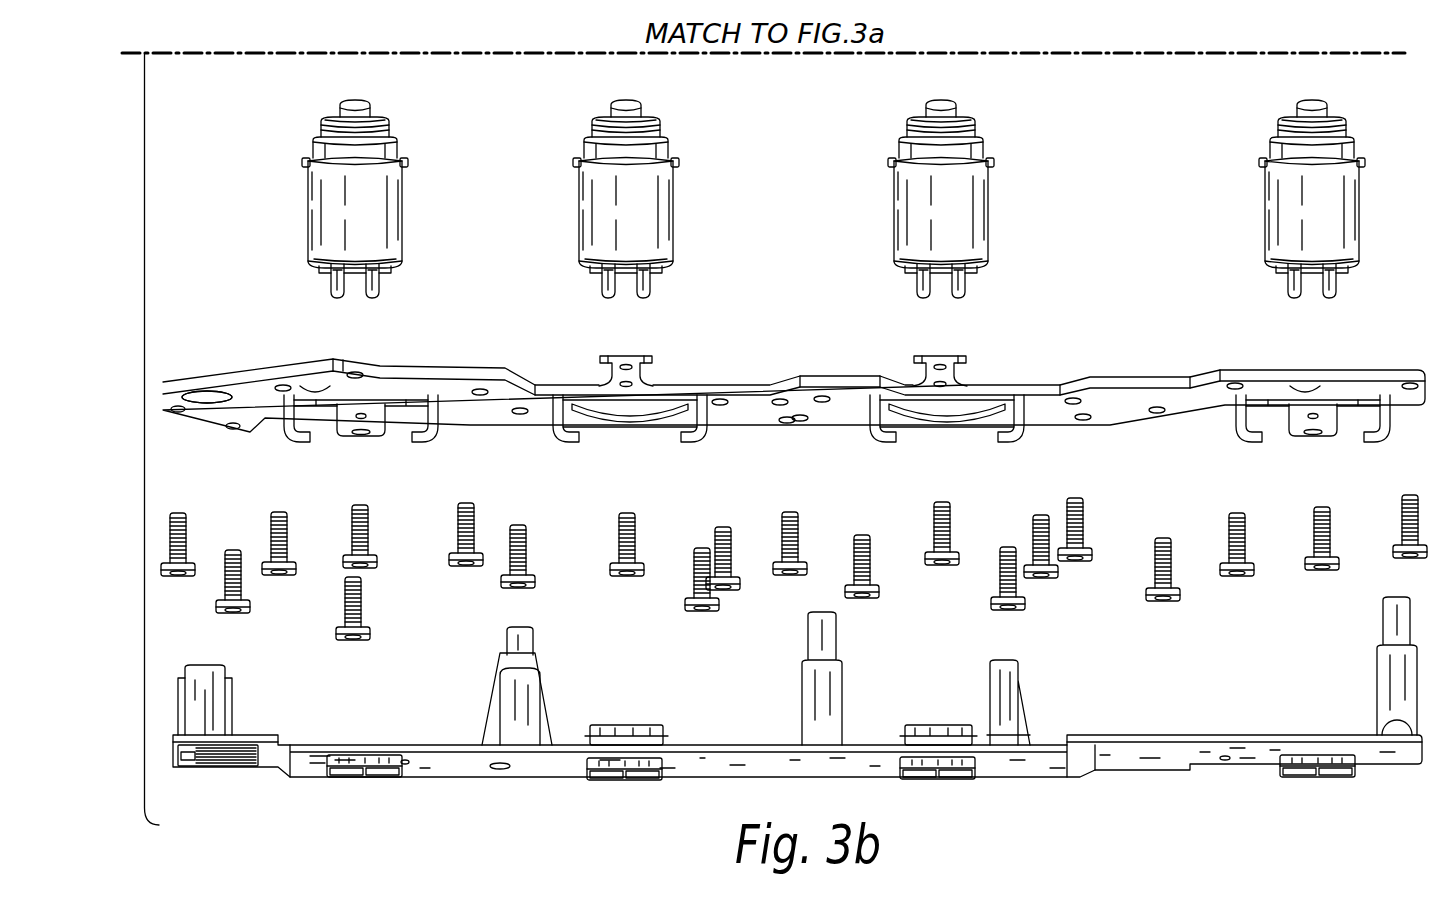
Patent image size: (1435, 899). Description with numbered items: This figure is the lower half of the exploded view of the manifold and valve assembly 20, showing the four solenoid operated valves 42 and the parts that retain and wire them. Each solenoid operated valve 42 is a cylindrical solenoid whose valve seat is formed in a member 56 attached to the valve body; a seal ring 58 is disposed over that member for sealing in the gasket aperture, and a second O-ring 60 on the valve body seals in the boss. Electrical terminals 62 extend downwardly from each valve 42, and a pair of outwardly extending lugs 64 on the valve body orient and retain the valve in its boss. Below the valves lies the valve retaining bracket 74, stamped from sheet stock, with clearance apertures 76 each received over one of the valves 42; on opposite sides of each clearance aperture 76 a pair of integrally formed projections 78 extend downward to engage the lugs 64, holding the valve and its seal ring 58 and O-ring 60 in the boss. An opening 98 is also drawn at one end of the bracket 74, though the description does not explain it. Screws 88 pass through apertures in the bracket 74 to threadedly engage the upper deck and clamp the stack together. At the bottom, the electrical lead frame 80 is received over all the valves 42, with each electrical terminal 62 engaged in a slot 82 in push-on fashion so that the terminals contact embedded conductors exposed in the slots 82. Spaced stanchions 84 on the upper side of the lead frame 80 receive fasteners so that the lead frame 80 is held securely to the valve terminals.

The manifold and valve assembly 20 is at (144, 250).
The solenoid operated valve 42 is at (318, 228).
The member 56 is at (385, 122).
The seal ring 58 is at (342, 105).
The second O-ring 60 is at (318, 132).
The electrical terminals 62 is at (346, 290).
The lugs 64 is at (303, 163).
The valve retaining bracket 74 is at (717, 385).
The clearance apertures 76 is at (327, 387).
The projections 78 is at (305, 442).
The electrical lead frame 80 is at (710, 745).
The slot 82 is at (378, 777).
The stanchions 84 is at (213, 697).
The screws 88 is at (242, 582).
The aperture 98 is at (207, 402).